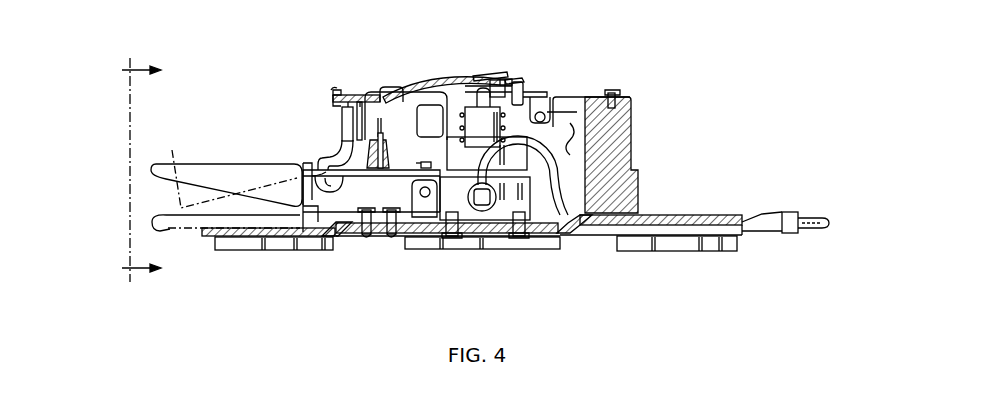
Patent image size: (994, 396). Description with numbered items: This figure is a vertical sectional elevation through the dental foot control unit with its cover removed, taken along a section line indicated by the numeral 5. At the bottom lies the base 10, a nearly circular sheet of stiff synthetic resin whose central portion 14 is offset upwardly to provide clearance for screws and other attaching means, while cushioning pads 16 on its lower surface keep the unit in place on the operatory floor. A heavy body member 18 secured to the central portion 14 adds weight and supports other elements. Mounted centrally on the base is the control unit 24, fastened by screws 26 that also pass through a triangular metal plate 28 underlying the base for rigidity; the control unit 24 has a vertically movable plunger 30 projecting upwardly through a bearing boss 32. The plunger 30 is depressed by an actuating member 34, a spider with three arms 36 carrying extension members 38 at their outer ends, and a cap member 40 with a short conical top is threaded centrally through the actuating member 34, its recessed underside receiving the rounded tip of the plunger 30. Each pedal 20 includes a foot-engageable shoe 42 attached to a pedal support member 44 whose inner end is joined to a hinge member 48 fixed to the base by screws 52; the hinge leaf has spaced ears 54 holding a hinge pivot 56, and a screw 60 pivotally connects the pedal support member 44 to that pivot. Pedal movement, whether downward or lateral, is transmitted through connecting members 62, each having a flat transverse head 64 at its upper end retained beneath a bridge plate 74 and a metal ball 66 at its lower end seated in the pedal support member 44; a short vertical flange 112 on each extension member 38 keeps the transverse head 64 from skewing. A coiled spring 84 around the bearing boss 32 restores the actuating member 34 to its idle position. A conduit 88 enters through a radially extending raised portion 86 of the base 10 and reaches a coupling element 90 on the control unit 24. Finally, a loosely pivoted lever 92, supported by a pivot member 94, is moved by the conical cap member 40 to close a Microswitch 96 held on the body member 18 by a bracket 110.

The section line 5- 5 is at (131, 170).
The base 10 is at (208, 238).
The central portion 14 is at (338, 237).
The cushioning pads 16 is at (280, 250).
The body member 18 is at (632, 130).
The pedals 20 is at (220, 127).
The control unit 24 is at (455, 148).
The screws 26 is at (448, 240).
The triangular metal plate 28 is at (405, 234).
The plunger 30 is at (498, 78).
The bearing boss 32 is at (468, 92).
The actuating member 34 is at (409, 82).
The arms 36 is at (447, 80).
The extension members 38 is at (383, 92).
The cap member 40 is at (481, 88).
The foot-engageable shoe 42 is at (263, 173).
The pedal support member 44 is at (310, 170).
The hinge members 48 is at (381, 209).
The screws 52 is at (380, 235).
The ears 54 is at (430, 202).
The hinge pivot 56 is at (447, 177).
The screw 60 is at (423, 163).
The connecting members 62 is at (343, 127).
The transverse head 64 is at (352, 94).
The metal ball 66 is at (333, 183).
The bridge plate 74 is at (614, 93).
The coiled spring 84 is at (504, 118).
The raised portion 86 is at (674, 216).
The conduit 88 is at (813, 222).
The coupling element 90 is at (486, 198).
The lever 92 is at (522, 74).
The pivot member 94 is at (525, 87).
The Microswitch 96 is at (562, 128).
The bracket 110 is at (573, 95).
The vertical flange 112 is at (333, 97).